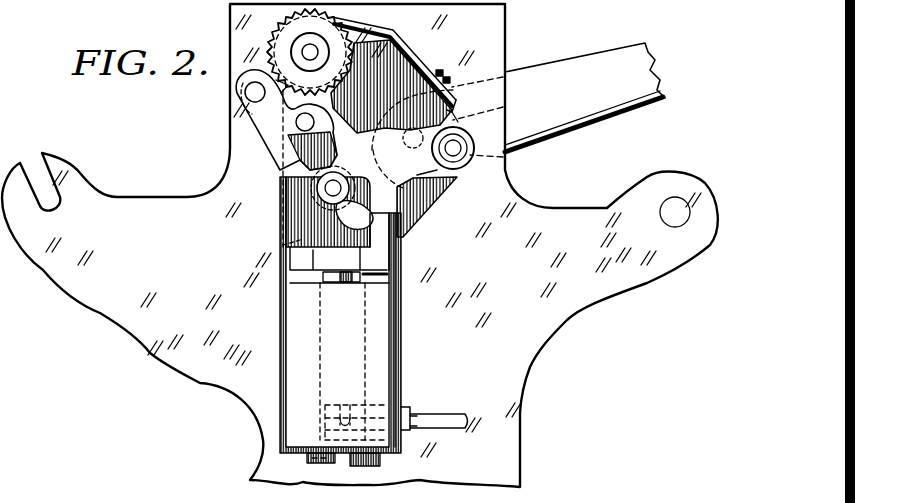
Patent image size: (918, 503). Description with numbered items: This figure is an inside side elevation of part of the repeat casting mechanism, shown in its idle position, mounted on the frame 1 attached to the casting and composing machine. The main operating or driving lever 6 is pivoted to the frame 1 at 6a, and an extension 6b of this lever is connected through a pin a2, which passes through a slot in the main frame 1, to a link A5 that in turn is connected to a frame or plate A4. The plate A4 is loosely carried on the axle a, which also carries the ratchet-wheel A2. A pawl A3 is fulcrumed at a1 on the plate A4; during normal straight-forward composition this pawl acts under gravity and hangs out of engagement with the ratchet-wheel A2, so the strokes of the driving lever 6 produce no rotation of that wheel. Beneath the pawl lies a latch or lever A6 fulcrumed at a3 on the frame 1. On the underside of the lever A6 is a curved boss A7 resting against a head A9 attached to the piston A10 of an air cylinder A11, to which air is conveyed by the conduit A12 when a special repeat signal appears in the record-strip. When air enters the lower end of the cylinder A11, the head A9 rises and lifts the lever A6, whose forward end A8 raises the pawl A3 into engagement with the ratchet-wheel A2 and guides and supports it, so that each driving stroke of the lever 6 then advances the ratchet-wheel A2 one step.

The frame 1 is at (493, 32).
The lever 6 is at (590, 67).
The pivot of lever 6 6a is at (500, 103).
The extension of the main operating lever 6b is at (271, 242).
The axle a is at (308, 50).
The fulcrum of pawl A3 a1 is at (268, 163).
The pin a2 is at (335, 203).
The fulcrum of lever A6 a3 is at (460, 178).
The ratchet-wheel A2 is at (335, 13).
The pawl A3 is at (383, 70).
The frame or plate A4 is at (285, 83).
The link A5 is at (267, 142).
The latch or lever A6 is at (422, 145).
The curved boss A7 is at (372, 212).
The forward end of lever A6 A8 is at (323, 183).
The head A9 is at (383, 234).
The piston A10 is at (317, 273).
The air cylinder A11 is at (353, 340).
The conduit A12 is at (430, 420).